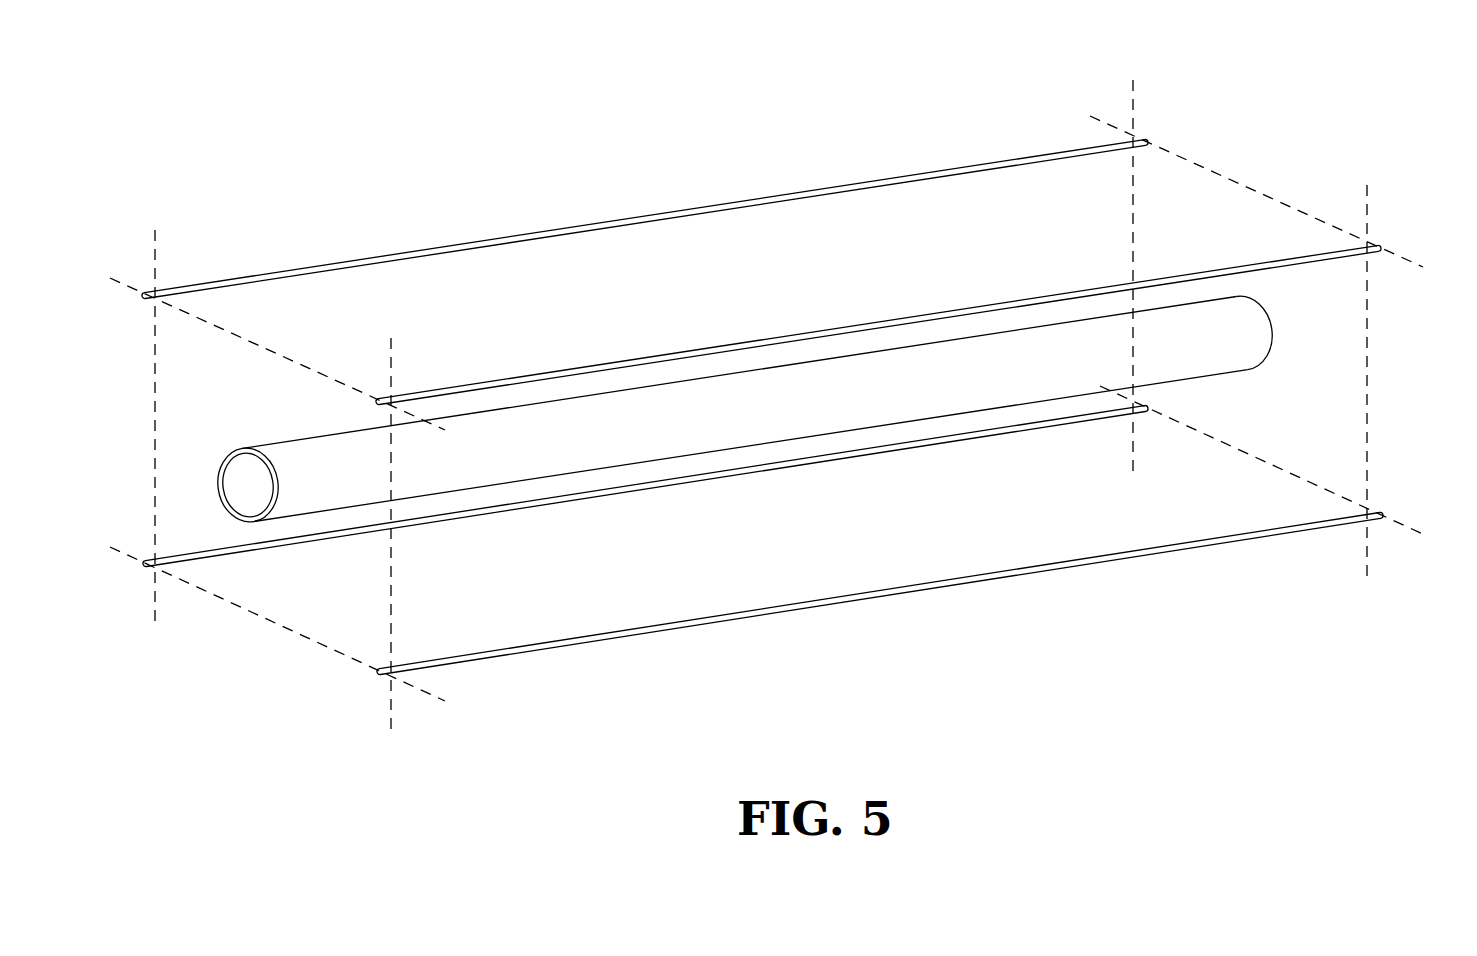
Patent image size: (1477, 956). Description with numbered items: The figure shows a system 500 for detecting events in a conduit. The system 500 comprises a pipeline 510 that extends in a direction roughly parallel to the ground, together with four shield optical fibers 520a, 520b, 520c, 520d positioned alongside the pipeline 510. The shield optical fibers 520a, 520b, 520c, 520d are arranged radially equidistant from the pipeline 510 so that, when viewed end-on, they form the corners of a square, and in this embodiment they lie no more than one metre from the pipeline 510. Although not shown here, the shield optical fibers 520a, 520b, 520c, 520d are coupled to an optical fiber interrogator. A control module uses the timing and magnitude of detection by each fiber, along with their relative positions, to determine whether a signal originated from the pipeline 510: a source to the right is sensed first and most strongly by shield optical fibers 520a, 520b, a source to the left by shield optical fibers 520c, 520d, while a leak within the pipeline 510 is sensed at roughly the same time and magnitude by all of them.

The system 500 is at (623, 102).
The pipeline 510 is at (653, 432).
The shield optical fiber 520a is at (900, 318).
The shield optical fiber 520b is at (955, 583).
The shield optical fiber 520c is at (888, 453).
The shield optical fiber 520d is at (807, 192).